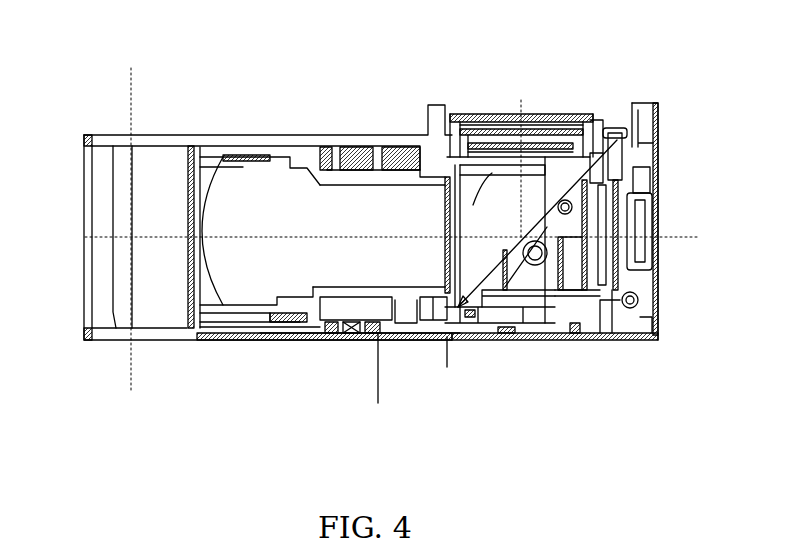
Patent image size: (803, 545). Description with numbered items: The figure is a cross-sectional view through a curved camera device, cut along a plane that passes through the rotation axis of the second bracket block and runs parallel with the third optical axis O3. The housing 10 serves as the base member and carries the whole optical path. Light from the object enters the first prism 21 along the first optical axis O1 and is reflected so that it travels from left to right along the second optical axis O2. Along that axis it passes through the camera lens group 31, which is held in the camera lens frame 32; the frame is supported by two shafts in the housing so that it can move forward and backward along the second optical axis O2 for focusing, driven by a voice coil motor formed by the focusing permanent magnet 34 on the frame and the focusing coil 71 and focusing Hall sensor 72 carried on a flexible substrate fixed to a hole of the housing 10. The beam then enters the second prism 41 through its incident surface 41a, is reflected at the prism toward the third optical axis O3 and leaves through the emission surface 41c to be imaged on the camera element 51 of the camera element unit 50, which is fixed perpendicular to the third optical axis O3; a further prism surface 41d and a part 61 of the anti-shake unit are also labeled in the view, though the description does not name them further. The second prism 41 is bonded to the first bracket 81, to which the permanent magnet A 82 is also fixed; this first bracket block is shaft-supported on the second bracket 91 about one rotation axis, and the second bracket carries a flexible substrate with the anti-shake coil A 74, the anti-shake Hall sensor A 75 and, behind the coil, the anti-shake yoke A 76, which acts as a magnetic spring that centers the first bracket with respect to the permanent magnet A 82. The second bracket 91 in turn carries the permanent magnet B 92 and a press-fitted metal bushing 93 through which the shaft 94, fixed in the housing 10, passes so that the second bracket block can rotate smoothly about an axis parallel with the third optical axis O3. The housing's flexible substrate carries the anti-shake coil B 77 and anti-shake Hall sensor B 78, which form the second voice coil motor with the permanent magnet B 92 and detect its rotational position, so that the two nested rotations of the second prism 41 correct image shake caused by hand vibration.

The housing 10 is at (181, 133).
The first prism 21 is at (143, 160).
The camera lens group 31 is at (245, 172).
The camera lens frame 32 is at (353, 173).
The focusing permanent magnet 34 is at (320, 322).
The second prism 41 is at (480, 340).
The incident surface 41a is at (465, 248).
The emission surface 41c is at (452, 196).
The lens barrel 41d is at (545, 200).
The camera element unit 50 is at (573, 110).
The camera element 51 is at (547, 123).
The screw 61 is at (547, 232).
The focusing coil 71 is at (337, 330).
The focusing Hall sensor 72 is at (352, 333).
The anti-shake coil A 74 is at (627, 227).
The anti-shake Hall sensor A 75 is at (640, 275).
The anti-shake yoke A 76 is at (612, 240).
The anti-shake coil B 77 is at (472, 337).
The anti-shake Hall sensor B 78 is at (502, 343).
The first bracket 81 is at (592, 140).
The permanent magnet A 82 is at (645, 257).
The second bracket 91 is at (595, 340).
The permanent magnet B 92 is at (613, 340).
The bushing 93 is at (657, 157).
The shaft 94 is at (640, 147).
The first optical axis O1 is at (133, 240).
The second optical axis O2 is at (258, 237).
The third optical axis O3 is at (515, 101).